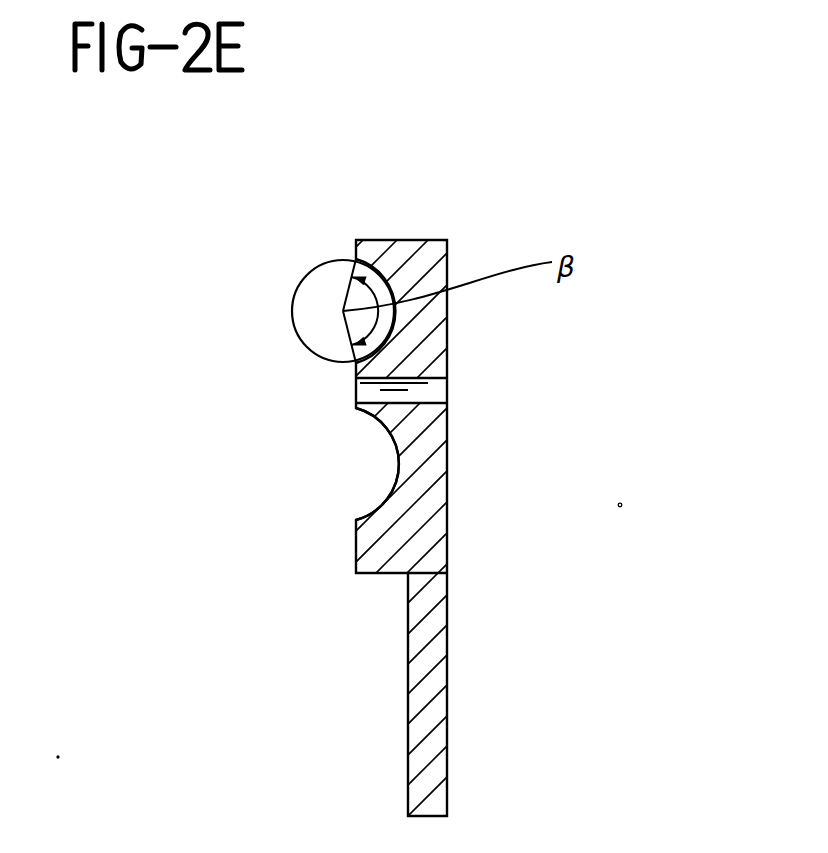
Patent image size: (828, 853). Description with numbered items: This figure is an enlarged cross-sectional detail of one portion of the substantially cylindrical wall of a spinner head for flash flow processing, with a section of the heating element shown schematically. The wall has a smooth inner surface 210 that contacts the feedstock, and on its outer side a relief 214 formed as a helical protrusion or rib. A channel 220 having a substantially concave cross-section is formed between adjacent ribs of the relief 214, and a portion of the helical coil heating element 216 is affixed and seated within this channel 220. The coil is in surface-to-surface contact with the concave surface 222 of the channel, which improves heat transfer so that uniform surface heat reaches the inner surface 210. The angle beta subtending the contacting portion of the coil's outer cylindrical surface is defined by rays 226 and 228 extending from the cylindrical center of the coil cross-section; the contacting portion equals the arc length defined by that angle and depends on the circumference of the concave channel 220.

The inner surface 210 is at (448, 689).
The relief 214 is at (355, 244).
The heating element 216 is at (304, 309).
The channel 220 is at (392, 498).
The concave surface 222 is at (407, 468).
The ray 226 is at (360, 280).
The ray 228 is at (360, 342).